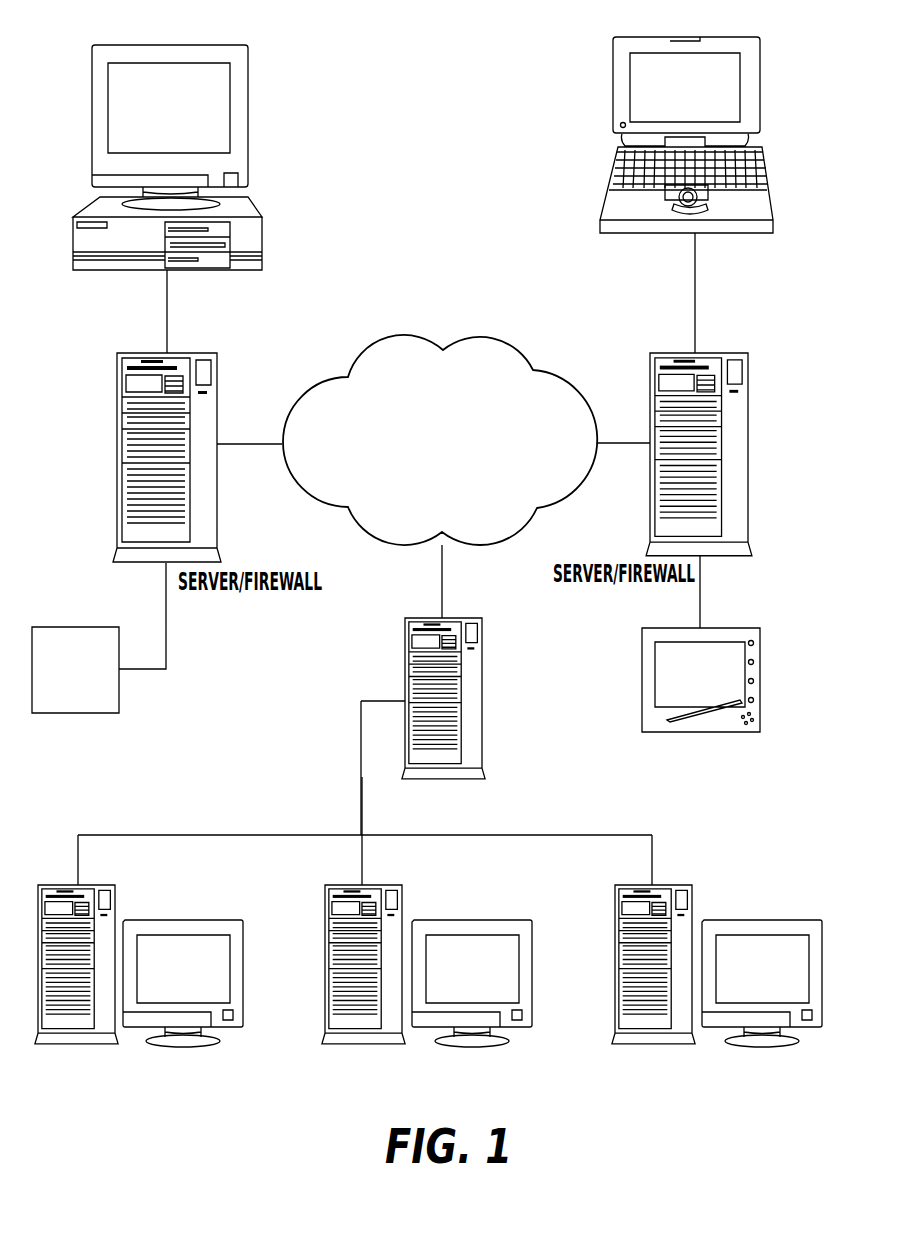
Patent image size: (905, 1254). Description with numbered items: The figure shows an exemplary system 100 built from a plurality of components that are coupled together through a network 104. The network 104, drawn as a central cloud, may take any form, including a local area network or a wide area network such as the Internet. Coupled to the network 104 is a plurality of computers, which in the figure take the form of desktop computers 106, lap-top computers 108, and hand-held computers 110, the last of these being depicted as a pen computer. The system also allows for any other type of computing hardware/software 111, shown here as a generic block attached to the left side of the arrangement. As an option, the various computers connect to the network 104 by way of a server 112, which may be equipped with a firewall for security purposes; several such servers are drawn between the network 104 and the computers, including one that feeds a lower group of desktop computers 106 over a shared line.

The system 100 is at (449, 100).
The network 104 is at (403, 334).
The desktop computers 106 is at (248, 110).
The lap-top computers 108 is at (613, 193).
The hand-held computers 110 is at (641, 663).
The computing hardware/software 111 is at (68, 624).
The server 112 is at (482, 701).